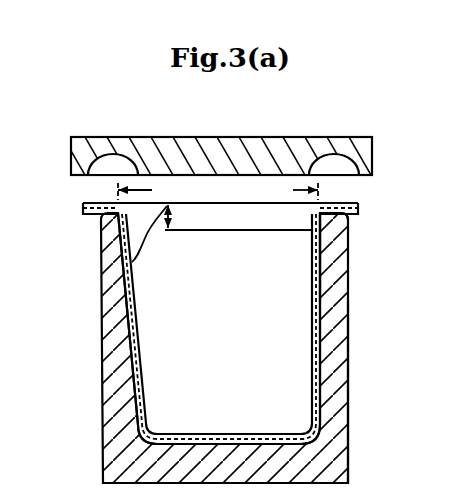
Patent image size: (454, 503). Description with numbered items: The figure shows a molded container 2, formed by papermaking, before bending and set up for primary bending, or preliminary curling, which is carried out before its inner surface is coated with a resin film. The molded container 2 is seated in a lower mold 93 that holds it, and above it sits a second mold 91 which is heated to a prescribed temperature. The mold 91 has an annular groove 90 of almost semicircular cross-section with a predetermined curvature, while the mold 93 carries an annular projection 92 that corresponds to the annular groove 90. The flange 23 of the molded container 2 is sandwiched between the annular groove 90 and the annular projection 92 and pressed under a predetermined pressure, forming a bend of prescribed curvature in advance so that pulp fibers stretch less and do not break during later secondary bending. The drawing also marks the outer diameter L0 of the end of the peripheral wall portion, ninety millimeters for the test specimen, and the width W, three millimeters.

The molded container 2 is at (328, 314).
The flange 23 is at (358, 210).
The annular groove 90 is at (346, 156).
The mold 91 is at (254, 137).
The annular projection 92 is at (337, 243).
The mold 93 is at (348, 379).
The width W is at (126, 256).
The outer diameter of the end of peripheral wall portion L0 is at (117, 189).